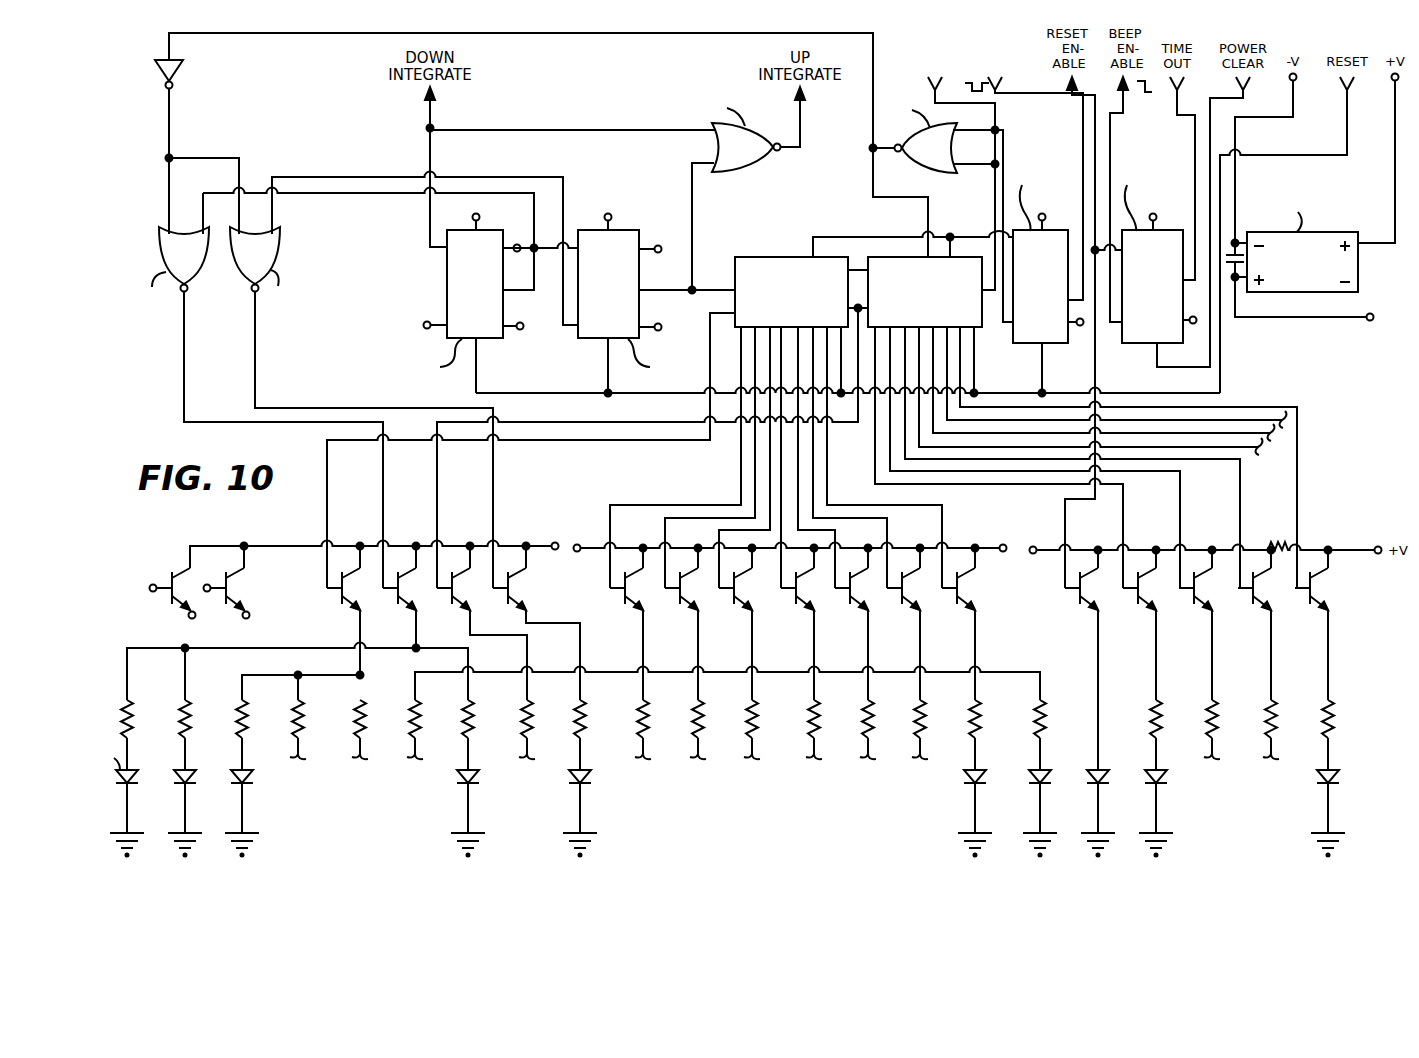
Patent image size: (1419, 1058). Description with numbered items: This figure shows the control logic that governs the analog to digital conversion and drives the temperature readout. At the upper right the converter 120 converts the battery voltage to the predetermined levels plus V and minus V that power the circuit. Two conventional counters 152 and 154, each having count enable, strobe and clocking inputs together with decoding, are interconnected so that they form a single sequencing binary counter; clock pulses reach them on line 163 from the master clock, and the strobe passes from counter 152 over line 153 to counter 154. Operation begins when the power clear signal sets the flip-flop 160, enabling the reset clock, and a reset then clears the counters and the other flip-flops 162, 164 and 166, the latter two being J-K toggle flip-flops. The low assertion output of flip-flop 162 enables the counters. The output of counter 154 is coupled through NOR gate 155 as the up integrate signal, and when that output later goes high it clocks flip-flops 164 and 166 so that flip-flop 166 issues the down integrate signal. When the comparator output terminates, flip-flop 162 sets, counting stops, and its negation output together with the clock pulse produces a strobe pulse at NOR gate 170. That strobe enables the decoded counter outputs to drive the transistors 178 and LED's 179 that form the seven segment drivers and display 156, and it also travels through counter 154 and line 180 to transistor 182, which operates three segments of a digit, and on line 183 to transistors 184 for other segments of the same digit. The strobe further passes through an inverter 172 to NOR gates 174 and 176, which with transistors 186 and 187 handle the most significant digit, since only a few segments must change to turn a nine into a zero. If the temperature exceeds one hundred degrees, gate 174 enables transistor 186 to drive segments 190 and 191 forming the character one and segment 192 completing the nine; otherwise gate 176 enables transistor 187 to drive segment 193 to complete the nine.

The inverter 172 is at (181, 66).
The NOR gate 174 is at (261, 390).
The NOR gate 176 is at (372, 372).
The NOR gate 155 is at (605, 194).
The NOR gate 170 is at (942, 208).
The flip-flop 166 is at (487, 295).
The flip-flop 164 is at (656, 295).
The counter 154 is at (776, 257).
The line 153 is at (858, 270).
The counter 152 is at (895, 258).
The line 163 is at (993, 203).
The flip-flop 162 is at (1052, 274).
The flip-flop 160 is at (1163, 247).
The converter 120 is at (1310, 259).
The line 183 is at (611, 422).
The line 180 is at (557, 441).
The transistor 182 is at (353, 611).
The transistor 186 is at (410, 610).
The transistors 184 is at (468, 612).
The transistor 187 is at (524, 610).
The transistors 178 is at (973, 575).
The LED's 179 is at (986, 778).
The segment 190 is at (120, 777).
The segment 191 is at (178, 777).
The segment 192 is at (477, 778).
The segment 193 is at (589, 778).
The drivers and display 156 is at (783, 836).